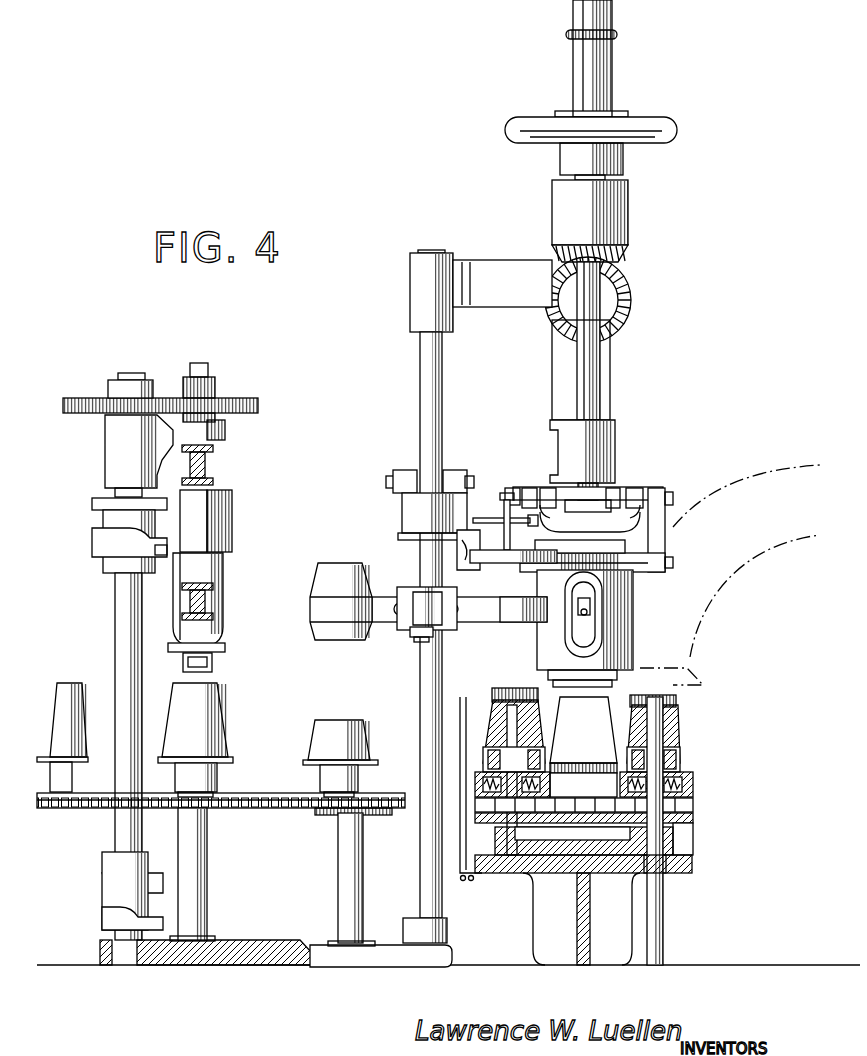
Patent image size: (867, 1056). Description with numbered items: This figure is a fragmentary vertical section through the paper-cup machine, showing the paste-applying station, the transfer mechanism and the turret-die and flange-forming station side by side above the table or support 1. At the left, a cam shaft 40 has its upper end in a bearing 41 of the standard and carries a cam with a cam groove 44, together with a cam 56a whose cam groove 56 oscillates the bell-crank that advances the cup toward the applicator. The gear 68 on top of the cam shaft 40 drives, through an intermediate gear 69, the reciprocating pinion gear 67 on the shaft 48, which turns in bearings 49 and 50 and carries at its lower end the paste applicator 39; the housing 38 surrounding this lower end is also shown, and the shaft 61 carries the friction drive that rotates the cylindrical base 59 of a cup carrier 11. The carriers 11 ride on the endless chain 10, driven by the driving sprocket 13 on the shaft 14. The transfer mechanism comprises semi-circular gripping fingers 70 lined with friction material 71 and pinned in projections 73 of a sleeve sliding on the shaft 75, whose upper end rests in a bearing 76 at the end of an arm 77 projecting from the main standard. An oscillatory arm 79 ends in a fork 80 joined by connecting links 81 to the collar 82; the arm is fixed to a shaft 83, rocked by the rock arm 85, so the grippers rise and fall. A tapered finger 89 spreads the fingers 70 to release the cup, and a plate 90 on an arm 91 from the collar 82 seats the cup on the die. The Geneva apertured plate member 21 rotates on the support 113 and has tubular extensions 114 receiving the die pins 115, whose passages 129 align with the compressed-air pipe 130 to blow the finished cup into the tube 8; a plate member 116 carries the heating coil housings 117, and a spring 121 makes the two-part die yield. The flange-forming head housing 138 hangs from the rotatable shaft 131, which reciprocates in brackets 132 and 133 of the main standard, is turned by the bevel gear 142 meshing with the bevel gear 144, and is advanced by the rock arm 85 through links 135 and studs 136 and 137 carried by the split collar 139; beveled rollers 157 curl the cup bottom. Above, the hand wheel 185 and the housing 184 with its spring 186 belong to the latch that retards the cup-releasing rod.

The table or support 1 is at (74, 962).
The tube 8 is at (740, 478).
The endless chain 10 is at (276, 810).
The cup carrier 11 is at (318, 730).
The driving sprocket 13 is at (378, 816).
The shaft 14 is at (340, 880).
The apertured plate member 21 is at (695, 850).
The tubular housing 38 is at (225, 616).
The paste applicator 39 is at (210, 672).
The cam shaft 40 is at (120, 608).
The bearing 41 is at (110, 452).
The cam groove 44 is at (98, 518).
The shaft 48 is at (205, 566).
The bearing 49 is at (215, 467).
The bearing 50 is at (215, 598).
The cam groove 56 is at (100, 895).
The cam 56a is at (100, 876).
The cylindrical base 59 is at (330, 785).
The shaft 61 is at (208, 894).
The reciprocating pinion gear 67 is at (217, 388).
The gear 68 is at (96, 396).
The intermediate gear 69 is at (258, 404).
The gripping fingers 70 is at (336, 612).
The friction material 71 is at (522, 618).
The projections 73 is at (424, 640).
The shaft 75 is at (421, 383).
The bearing 76 is at (420, 272).
The arm 77 is at (498, 268).
The oscillatory arm 79 is at (458, 547).
The fork 80 is at (418, 474).
The connecting links 81 is at (443, 474).
The collar 82 is at (405, 521).
The shaft 83 is at (495, 500).
The rock arm 85 is at (610, 518).
The finger 89 is at (463, 698).
The plate 90 is at (476, 566).
The arm 91 is at (510, 500).
The table or support 113 is at (700, 870).
The bosses or tubular extensions 114 is at (694, 834).
The pins 115 is at (530, 874).
The plate member 116 is at (695, 820).
The heating coil housings 117 is at (696, 790).
The spring 121 is at (675, 760).
The bores or passages 129 is at (668, 735).
The pipe 130 is at (665, 936).
The rotatable shaft 131 is at (600, 348).
The bracket 132 is at (615, 457).
The bracket 133 is at (624, 216).
The links 135 is at (665, 531).
The studs 136 is at (669, 492).
The studs 137 is at (673, 562).
The housing 138 is at (615, 647).
The split collar 139 is at (615, 575).
The bevel gear 142 is at (628, 262).
The bevel gear 144 is at (631, 296).
The beveled rollers 157 is at (582, 618).
The housing 184 is at (580, 62).
The hand wheel 185 is at (662, 118).
The spring 186 is at (614, 36).